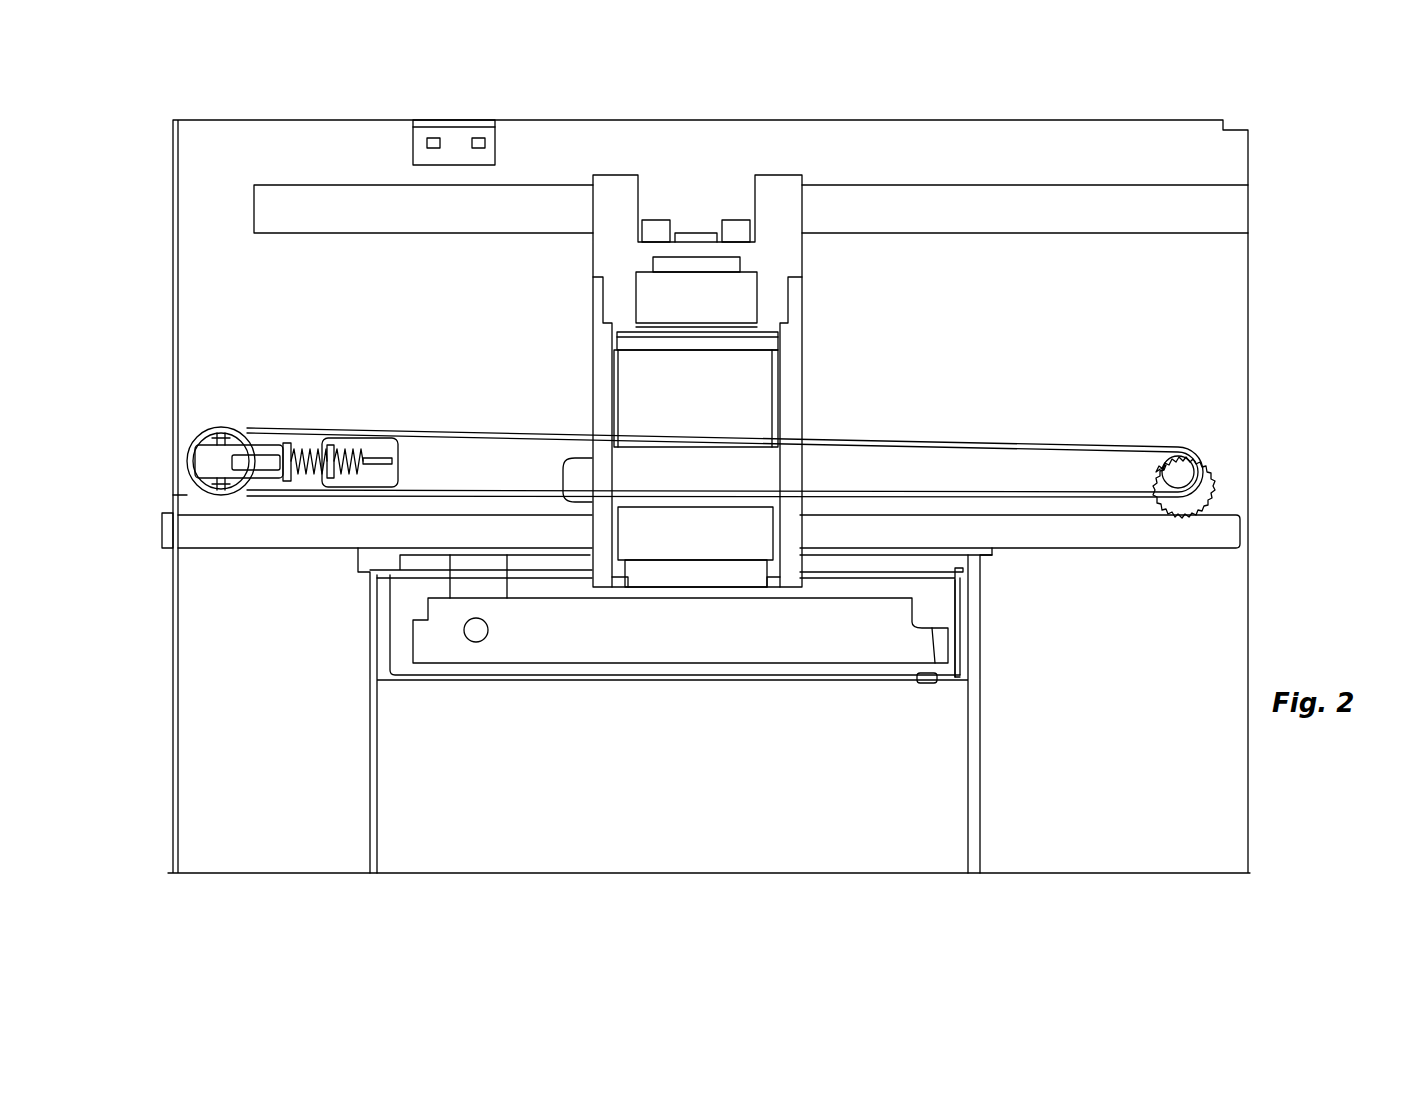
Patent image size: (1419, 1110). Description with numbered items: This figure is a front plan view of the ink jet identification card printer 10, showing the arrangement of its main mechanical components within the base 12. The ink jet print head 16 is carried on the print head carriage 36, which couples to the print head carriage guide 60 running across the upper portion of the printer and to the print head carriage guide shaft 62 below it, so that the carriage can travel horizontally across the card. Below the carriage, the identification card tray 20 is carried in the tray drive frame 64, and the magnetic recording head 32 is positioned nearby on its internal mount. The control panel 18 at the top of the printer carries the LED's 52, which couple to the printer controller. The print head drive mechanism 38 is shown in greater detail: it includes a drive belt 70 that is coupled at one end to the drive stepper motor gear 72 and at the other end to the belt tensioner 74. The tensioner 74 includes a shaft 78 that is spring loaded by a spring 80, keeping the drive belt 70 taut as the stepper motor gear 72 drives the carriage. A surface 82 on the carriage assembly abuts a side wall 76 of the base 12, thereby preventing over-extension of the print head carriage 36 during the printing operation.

The ink jet identification card printer 10 is at (1078, 108).
The base 12 is at (173, 797).
The ink jet print head 16 is at (704, 397).
The control panel 18 is at (492, 109).
The tray 20 is at (704, 645).
The magnetic recording head 32 is at (463, 583).
The print head carriage 36 is at (605, 251).
The print head drive mechanism 38 is at (706, 455).
The LED's 52 is at (472, 138).
The print head carriage guide 60 is at (956, 205).
The print head carriage guide shaft 62 is at (197, 533).
The tray drive frame 64 is at (960, 657).
The drive belt 70 is at (958, 445).
The drive stepper motor gear 72 is at (1182, 472).
The belt tensioner 74 is at (207, 457).
The side wall 76 is at (173, 495).
The shaft 78 is at (383, 462).
The spring 80 is at (300, 447).
The surface 82 is at (572, 478).